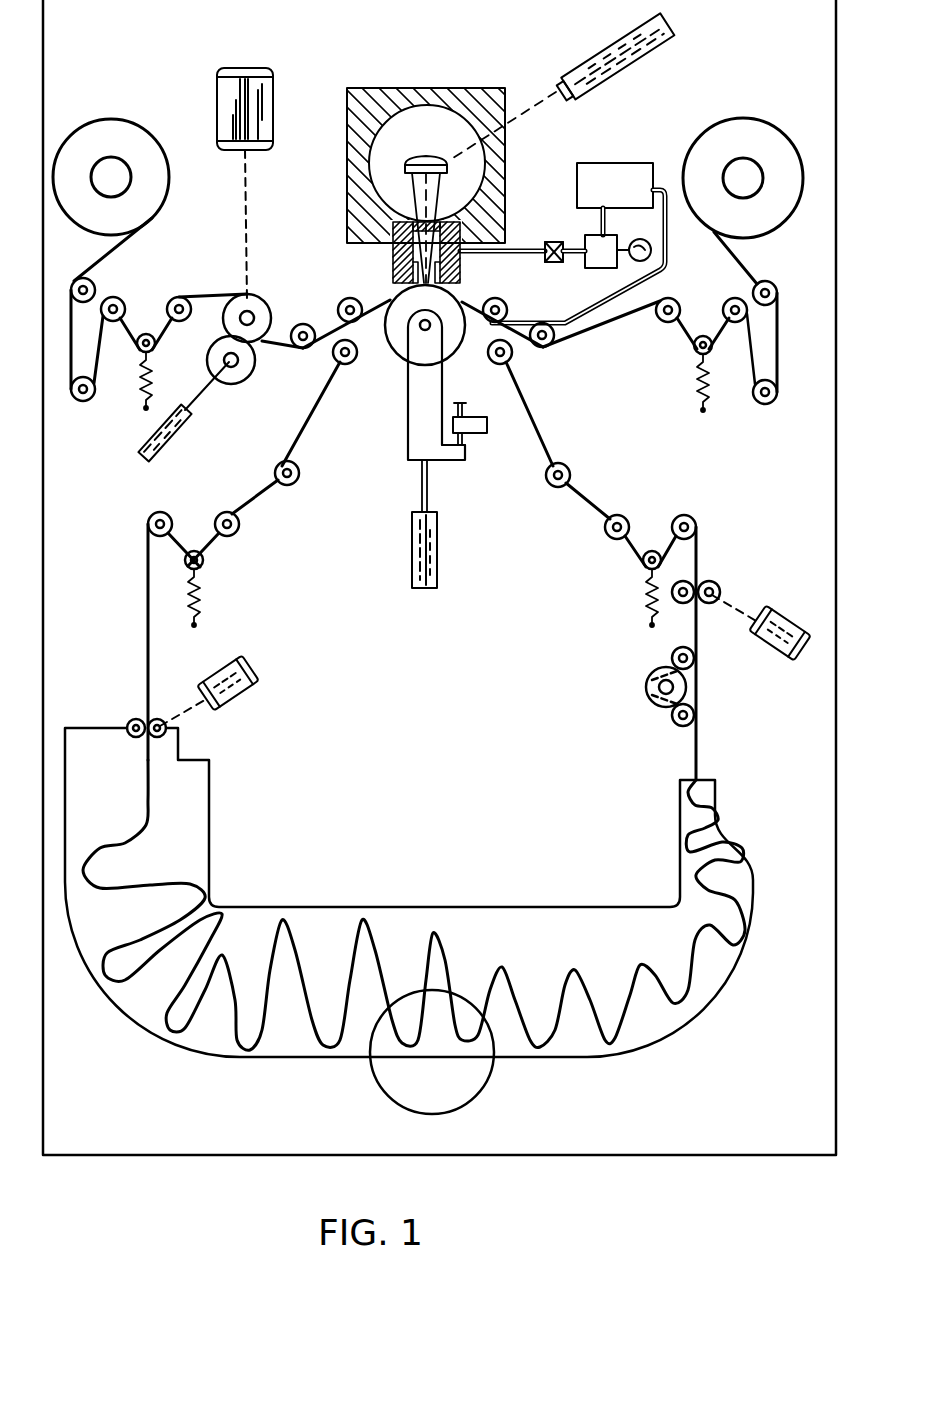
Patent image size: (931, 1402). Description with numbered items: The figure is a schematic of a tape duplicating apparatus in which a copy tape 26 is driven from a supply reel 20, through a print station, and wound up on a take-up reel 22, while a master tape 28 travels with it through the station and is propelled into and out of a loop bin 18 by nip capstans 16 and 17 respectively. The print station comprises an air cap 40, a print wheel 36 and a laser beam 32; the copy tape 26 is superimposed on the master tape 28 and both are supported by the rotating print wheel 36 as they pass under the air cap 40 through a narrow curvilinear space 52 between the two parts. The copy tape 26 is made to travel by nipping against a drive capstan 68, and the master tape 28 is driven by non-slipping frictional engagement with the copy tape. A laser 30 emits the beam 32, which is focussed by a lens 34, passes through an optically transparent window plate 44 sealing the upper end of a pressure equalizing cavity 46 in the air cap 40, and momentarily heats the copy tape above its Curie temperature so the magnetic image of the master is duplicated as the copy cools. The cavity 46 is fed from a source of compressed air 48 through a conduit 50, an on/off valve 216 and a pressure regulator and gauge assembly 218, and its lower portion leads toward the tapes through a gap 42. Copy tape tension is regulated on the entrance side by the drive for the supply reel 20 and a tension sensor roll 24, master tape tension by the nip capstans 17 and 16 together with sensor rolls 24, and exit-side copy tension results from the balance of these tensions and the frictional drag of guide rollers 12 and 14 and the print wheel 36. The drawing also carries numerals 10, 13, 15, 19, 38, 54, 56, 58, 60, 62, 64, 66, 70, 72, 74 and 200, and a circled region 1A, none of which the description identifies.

The web processing apparatus 10 is at (235, 1156).
The guide rollers 12 is at (150, 334).
The motor 13 is at (238, 695).
The guide rollers 14 is at (350, 366).
The drive roller 15 is at (648, 688).
The nip capstan 16 is at (160, 718).
The nip capstan 17 is at (712, 582).
The loop bin 18 is at (208, 787).
The motor 19 is at (790, 625).
The supply reel 20 is at (776, 141).
The take-up reel 22 is at (119, 127).
The tension sensor roll 24 is at (152, 350).
The copy tape 26 is at (750, 362).
The master tape 28 is at (250, 500).
The laser 30 is at (625, 65).
The laser beam 32 is at (490, 118).
The lens 34 is at (434, 160).
The print wheel 36 is at (400, 345).
The nozzle body 38 is at (393, 268).
The air cap 40 is at (462, 262).
The gap 42 is at (392, 248).
The optically transparent window plate 44 is at (346, 206).
The pressure equalizing cavity 46 is at (500, 244).
The source of compressed air 48 is at (612, 162).
The conduit 50 is at (530, 240).
The curvilinear space 52 is at (436, 285).
The pivot arm 54 is at (412, 443).
The counterweight 56 is at (430, 555).
The rod 58 is at (420, 494).
The adjusting stem 60 is at (465, 438).
The adjusting screw 62 is at (466, 408).
The adjusting block 64 is at (488, 427).
The bracket 66 is at (455, 460).
The drive capstan 68 is at (233, 310).
The drive motor 70 is at (275, 92).
The pressure roller 72 is at (235, 378).
The actuator cylinder 74 is at (145, 462).
The regulator 200 is at (520, 268).
The on/off valve 216 is at (553, 241).
The pressure regulator and gauge assembly 218 is at (632, 242).
The detail circle 1A is at (483, 1088).